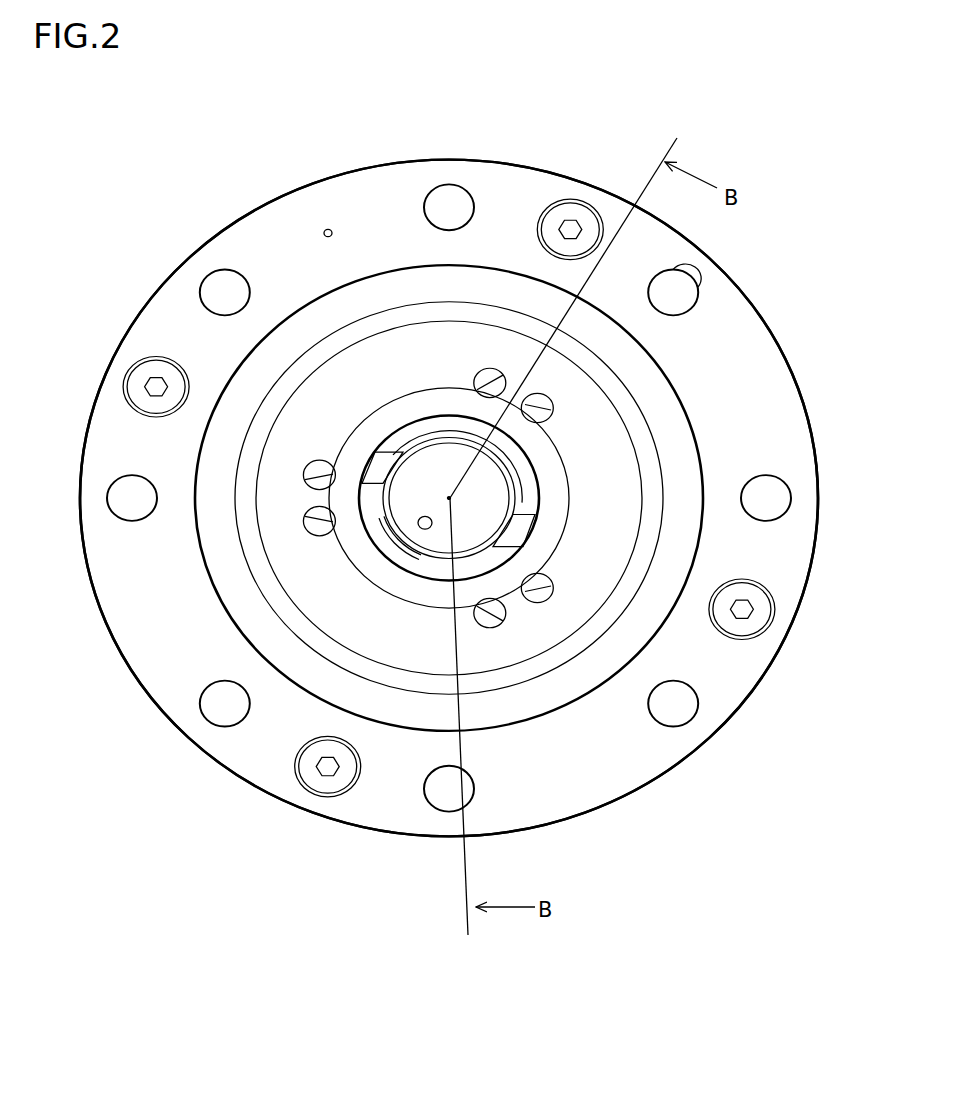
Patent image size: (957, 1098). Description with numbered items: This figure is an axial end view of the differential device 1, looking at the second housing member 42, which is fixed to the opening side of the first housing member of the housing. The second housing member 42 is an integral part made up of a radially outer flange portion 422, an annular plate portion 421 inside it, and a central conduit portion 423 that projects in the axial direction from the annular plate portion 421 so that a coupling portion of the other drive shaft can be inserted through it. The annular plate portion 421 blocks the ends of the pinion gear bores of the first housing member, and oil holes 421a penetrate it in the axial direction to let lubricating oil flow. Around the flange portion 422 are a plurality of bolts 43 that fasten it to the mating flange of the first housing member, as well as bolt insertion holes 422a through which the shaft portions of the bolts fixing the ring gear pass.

The differential device 1 is at (298, 163).
The second housing member 42 is at (225, 228).
The bolts 43 is at (578, 215).
The annular plate portion 421 is at (598, 432).
The oil holes 421a is at (503, 632).
The flange portion 422 is at (743, 325).
The bolt insertion holes 422a is at (692, 283).
The conduit portion 423 is at (552, 480).